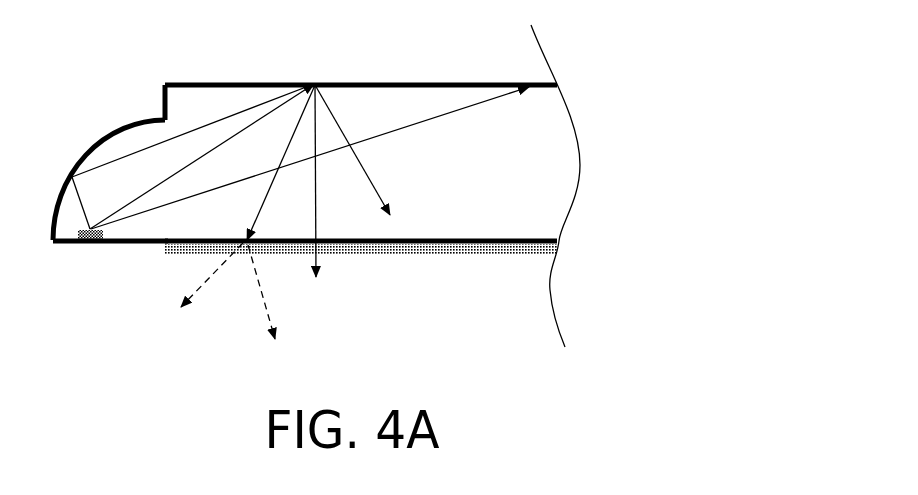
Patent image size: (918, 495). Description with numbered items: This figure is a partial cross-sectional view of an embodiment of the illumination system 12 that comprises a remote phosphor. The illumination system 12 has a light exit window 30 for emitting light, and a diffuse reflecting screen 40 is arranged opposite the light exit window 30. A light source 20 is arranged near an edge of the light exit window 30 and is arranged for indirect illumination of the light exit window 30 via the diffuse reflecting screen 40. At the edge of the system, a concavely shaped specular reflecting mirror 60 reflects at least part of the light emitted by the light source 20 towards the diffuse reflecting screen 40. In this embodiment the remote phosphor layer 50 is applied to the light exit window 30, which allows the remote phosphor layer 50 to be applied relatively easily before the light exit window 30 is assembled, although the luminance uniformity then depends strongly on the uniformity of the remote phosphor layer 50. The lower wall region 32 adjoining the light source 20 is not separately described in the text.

The illumination system 12 is at (479, 35).
The light source 20 is at (88, 245).
The light exit window 30 is at (372, 256).
The bottom wall 32 is at (150, 245).
The diffuse reflecting screen 40 is at (456, 90).
The remote phosphor layer 50 is at (463, 256).
The specular reflecting mirror 60 is at (121, 134).